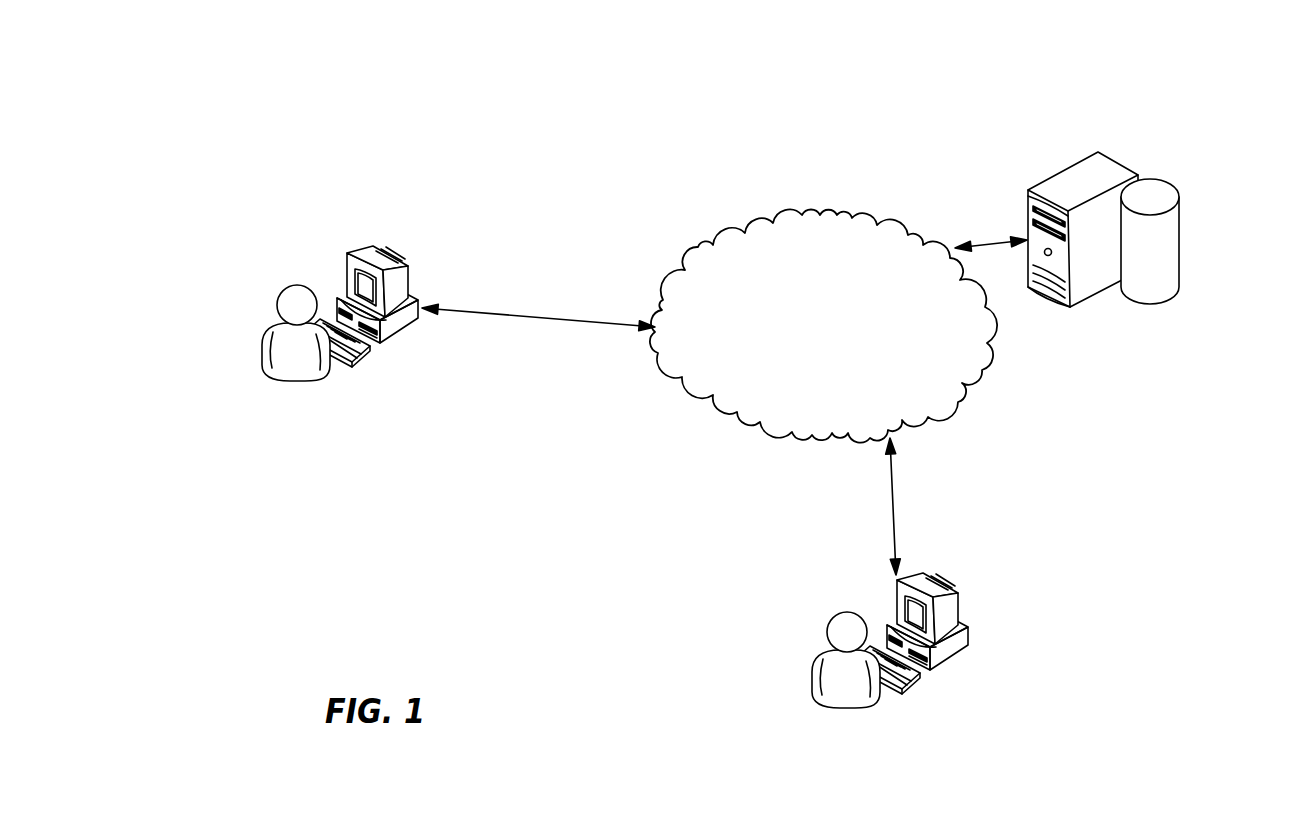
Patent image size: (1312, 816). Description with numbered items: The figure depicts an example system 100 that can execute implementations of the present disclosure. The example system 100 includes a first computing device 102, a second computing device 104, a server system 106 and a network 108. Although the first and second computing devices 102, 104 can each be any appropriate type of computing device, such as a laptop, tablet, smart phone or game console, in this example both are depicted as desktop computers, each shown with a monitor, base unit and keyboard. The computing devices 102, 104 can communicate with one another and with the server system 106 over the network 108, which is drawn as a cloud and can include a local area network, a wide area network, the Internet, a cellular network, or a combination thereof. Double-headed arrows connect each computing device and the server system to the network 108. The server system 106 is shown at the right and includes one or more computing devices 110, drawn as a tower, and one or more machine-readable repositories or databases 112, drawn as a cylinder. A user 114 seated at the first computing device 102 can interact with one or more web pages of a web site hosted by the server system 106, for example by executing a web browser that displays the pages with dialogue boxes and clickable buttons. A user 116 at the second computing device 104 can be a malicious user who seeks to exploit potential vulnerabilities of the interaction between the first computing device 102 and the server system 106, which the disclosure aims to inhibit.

The example system 100 is at (908, 87).
The first computing device 102 is at (404, 268).
The second computing device 104 is at (960, 627).
The server system 106 is at (1223, 259).
The network 108 is at (798, 213).
The computing device 110 is at (1119, 161).
The database 112 is at (1180, 196).
The user 114 is at (295, 288).
The user 116 is at (832, 706).